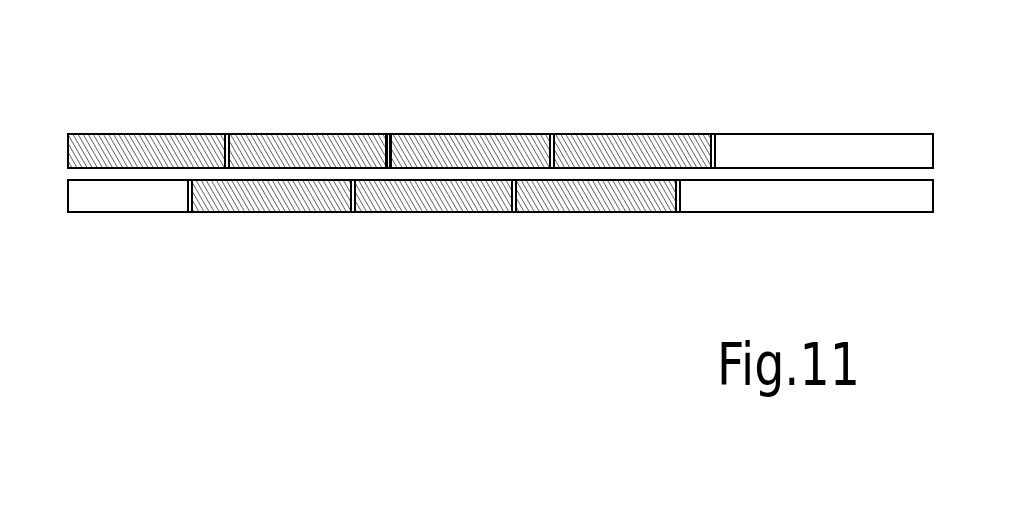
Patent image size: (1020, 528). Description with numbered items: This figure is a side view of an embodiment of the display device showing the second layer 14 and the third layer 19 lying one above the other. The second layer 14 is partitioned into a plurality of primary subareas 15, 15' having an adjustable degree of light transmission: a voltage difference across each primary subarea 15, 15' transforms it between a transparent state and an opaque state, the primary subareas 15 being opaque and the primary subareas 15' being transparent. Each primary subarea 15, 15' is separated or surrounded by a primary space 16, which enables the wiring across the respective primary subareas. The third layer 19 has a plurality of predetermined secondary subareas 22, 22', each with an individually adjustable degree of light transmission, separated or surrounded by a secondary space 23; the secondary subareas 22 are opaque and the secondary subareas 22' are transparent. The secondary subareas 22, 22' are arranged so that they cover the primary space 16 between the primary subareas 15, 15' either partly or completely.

The second layer 14 is at (862, 215).
The third layer 19 is at (858, 133).
The primary subarea 15 is at (434, 232).
The primary subarea 15' is at (500, 237).
The primary space 16 is at (512, 213).
The secondary subarea 22 is at (389, 121).
The secondary subarea 22' is at (824, 120).
The secondary space 23 is at (390, 136).